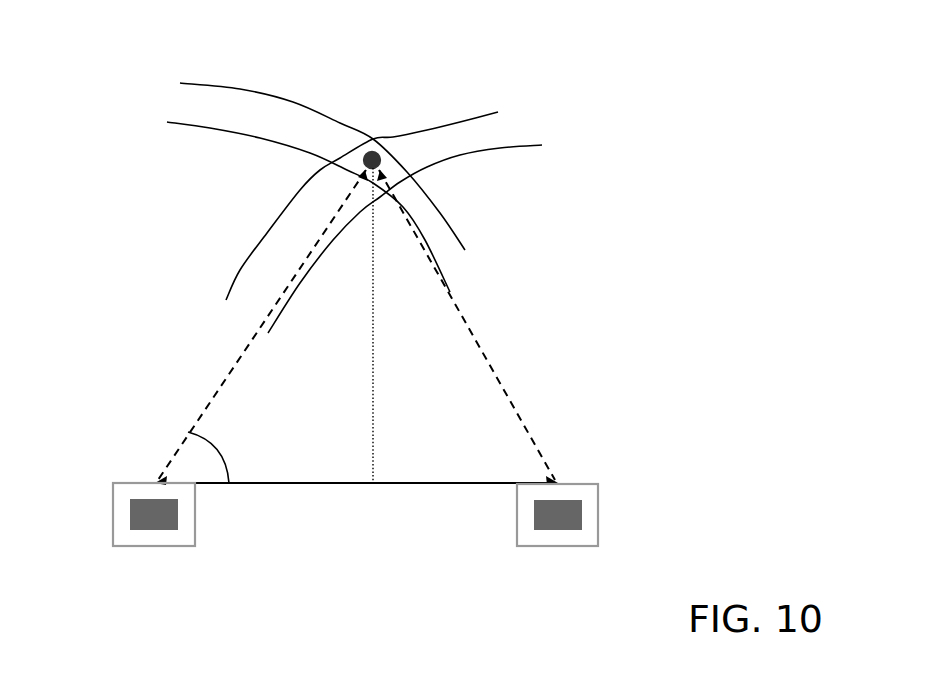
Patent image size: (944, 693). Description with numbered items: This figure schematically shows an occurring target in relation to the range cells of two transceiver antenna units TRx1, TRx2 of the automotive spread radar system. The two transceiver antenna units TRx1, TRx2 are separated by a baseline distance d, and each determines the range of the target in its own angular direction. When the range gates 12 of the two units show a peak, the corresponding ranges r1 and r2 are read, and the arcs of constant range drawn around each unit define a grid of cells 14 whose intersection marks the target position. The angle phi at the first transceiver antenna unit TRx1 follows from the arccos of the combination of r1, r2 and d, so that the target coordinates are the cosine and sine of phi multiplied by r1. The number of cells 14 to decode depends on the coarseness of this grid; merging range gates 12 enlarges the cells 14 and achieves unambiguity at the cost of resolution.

The range gate 12 is at (373, 150).
The cell 14 is at (400, 167).
The range from first transceiver antenna unit r1 is at (261, 327).
The range from second transceiver antenna unit r2 is at (467, 327).
The distance between transceiver antenna units d is at (357, 498).
The angle phi is at (205, 457).
The first transceiver antenna unit TRx1 is at (154, 529).
The second transceiver antenna unit TRx2 is at (557, 530).